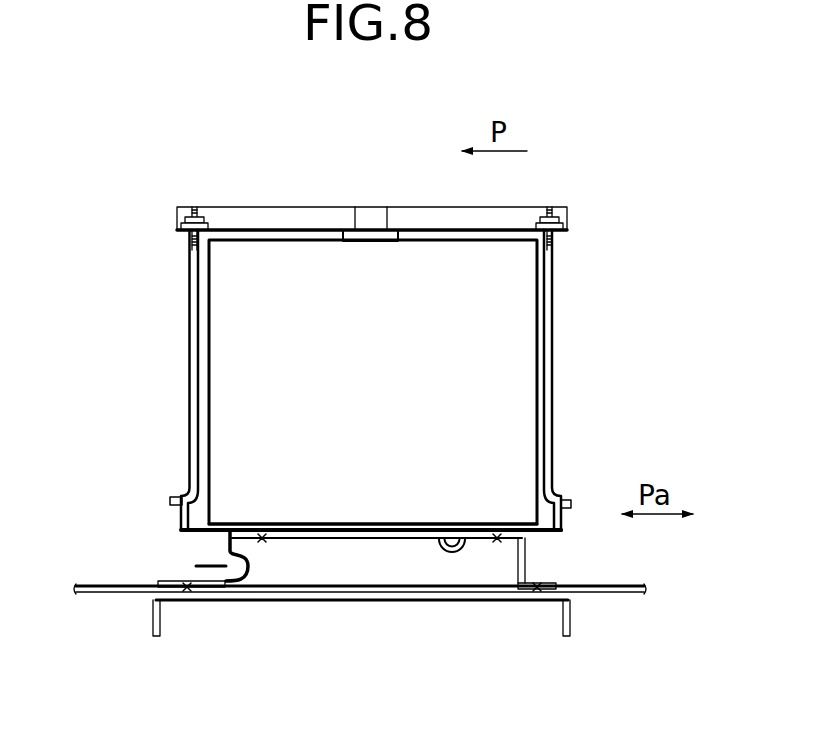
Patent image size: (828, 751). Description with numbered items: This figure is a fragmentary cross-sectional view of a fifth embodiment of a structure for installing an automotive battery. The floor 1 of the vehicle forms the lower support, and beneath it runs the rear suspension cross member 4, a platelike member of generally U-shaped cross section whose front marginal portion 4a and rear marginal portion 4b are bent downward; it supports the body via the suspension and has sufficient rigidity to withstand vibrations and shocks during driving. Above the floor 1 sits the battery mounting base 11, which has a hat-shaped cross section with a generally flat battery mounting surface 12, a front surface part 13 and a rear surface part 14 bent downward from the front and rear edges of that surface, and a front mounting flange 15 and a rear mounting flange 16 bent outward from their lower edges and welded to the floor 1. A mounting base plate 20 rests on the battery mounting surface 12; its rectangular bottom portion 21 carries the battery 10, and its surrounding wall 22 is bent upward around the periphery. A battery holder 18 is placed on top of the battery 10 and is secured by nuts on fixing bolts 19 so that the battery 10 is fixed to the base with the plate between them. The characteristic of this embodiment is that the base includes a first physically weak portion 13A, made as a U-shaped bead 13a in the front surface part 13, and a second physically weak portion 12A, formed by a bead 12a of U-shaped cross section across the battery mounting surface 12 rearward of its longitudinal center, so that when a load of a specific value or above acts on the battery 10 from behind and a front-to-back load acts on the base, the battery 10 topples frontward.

The floor 1 is at (95, 594).
The rear suspension cross member 4 is at (347, 603).
The front marginal portion 4a is at (152, 633).
The rear marginal portion 4b is at (574, 625).
The battery 10 is at (520, 345).
The battery mounting base 11 is at (576, 540).
The battery mounting surface 12 is at (290, 545).
The second physically weak portion 12A is at (430, 553).
The bead 12a is at (452, 556).
The front surface part 13 is at (230, 542).
The U-shaped bead 13a is at (226, 562).
The first physically weak portion 13A is at (184, 572).
The rear surface part 14 is at (565, 538).
The front mounting flange 15 is at (218, 592).
The rear mounting flange 16 is at (550, 592).
The battery holder 18 is at (293, 218).
The fixing bolts 19 is at (190, 293).
The mounting base plate 20 is at (567, 474).
The bottom portion 21 is at (368, 523).
The surrounding wall 22 is at (175, 511).